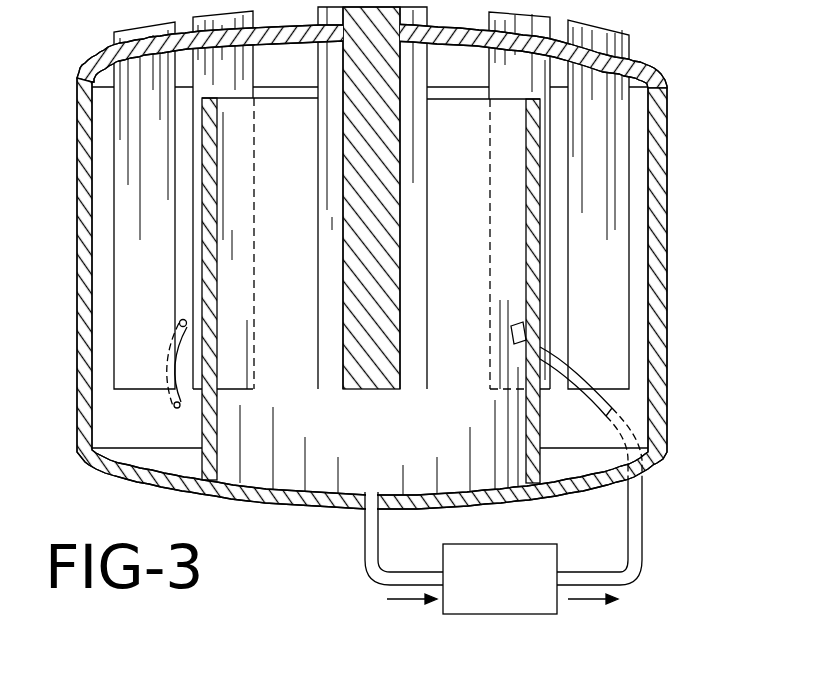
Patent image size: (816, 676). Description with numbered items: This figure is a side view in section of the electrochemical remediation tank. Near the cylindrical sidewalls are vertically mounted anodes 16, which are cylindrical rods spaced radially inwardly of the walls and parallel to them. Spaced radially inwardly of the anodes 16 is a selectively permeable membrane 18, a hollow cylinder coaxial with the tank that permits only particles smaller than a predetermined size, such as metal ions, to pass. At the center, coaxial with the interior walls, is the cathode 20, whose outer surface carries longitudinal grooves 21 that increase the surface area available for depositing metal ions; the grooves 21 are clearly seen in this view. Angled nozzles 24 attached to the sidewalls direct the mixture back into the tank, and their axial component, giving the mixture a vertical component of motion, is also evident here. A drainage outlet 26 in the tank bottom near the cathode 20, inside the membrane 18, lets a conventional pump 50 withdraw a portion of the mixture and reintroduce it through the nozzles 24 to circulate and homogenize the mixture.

The anodes 16 is at (550, 212).
The selectively permeable membrane 18 is at (210, 163).
The cathode 20 is at (317, 353).
The grooves 21 is at (334, 198).
The nozzles 24 is at (175, 406).
The drainage outlet 26 is at (373, 503).
The pump 50 is at (513, 543).